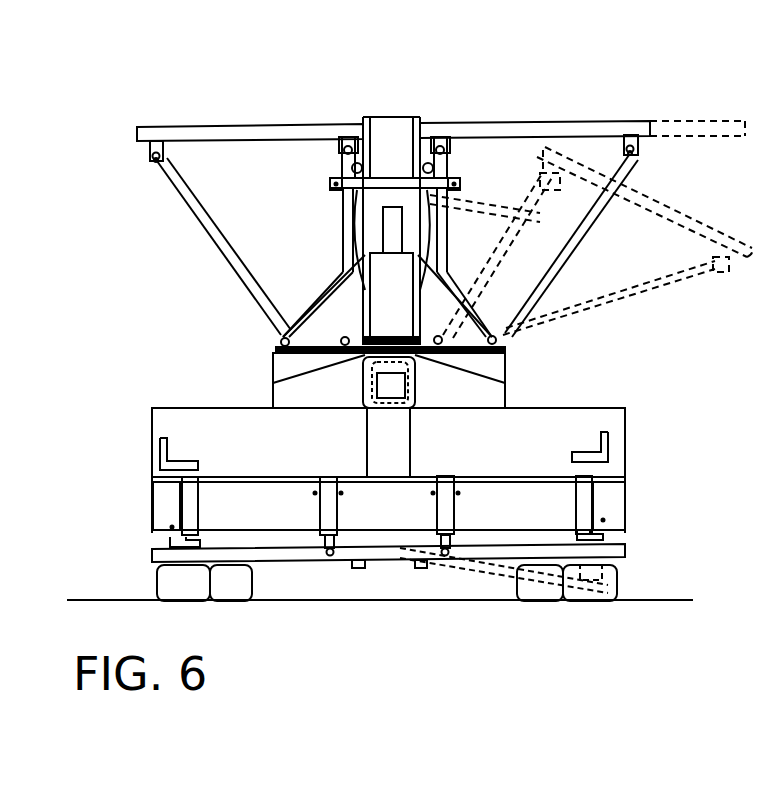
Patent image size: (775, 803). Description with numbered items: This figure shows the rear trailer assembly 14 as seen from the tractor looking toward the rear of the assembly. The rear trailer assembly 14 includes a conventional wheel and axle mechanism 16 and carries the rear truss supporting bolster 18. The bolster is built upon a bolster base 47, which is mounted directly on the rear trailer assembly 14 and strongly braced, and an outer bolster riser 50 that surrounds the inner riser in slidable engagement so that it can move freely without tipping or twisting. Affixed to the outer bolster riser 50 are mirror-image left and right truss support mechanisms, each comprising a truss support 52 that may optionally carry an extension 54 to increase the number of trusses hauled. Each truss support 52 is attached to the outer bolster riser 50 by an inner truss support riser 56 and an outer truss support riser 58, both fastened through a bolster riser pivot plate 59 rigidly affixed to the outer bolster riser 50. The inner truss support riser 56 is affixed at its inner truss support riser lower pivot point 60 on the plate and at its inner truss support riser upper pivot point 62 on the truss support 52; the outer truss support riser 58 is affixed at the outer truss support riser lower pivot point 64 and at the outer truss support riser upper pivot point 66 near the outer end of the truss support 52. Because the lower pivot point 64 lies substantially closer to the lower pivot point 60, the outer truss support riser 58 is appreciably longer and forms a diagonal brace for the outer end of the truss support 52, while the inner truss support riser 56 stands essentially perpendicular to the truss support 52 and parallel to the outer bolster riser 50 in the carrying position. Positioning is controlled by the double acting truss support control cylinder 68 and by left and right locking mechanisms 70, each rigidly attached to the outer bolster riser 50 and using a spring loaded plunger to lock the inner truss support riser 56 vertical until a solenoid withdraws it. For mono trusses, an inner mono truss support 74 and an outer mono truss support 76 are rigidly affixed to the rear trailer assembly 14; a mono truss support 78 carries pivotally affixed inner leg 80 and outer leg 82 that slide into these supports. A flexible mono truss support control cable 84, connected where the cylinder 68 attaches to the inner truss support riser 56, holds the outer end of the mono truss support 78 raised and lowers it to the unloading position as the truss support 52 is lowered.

The rear trailer assembly 14 is at (573, 405).
The wheel and axle mechanism 16 is at (166, 581).
The rear truss supporting bolster 18 is at (406, 118).
The bolster base 47 is at (272, 387).
The outer bolster riser 50 is at (380, 223).
The truss support 52 is at (225, 130).
The extension 54 is at (697, 121).
The inner truss support riser 56 is at (340, 160).
The outer truss support riser 58 is at (160, 166).
The bolster riser pivot plate 59 is at (278, 343).
The inner truss support riser lower pivot point 60 is at (344, 337).
The inner truss support riser upper pivot point 62 is at (346, 137).
The outer truss support riser lower pivot point 64 is at (258, 314).
The outer truss support riser upper pivot point 66 is at (153, 141).
The truss support control cylinder 68 is at (378, 118).
The locking mechanism 70 is at (340, 163).
The inner mono truss support 74 is at (440, 508).
The outer mono truss support 76 is at (183, 512).
The mono truss support 78 is at (168, 551).
The inner leg 80 is at (331, 556).
The outer leg 82 is at (178, 548).
The mono truss support control cable 84 is at (455, 228).